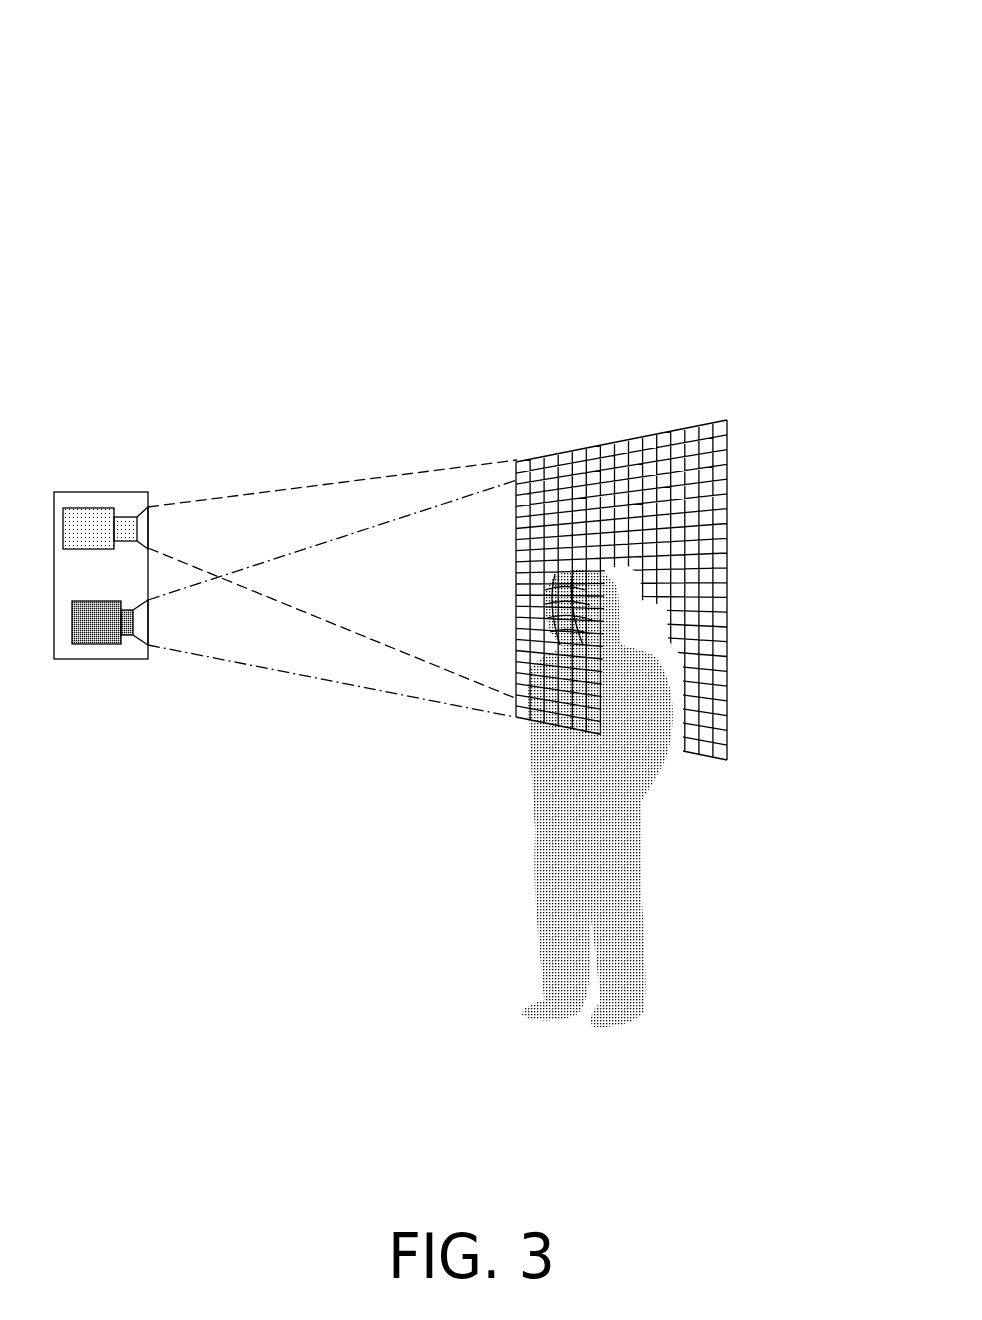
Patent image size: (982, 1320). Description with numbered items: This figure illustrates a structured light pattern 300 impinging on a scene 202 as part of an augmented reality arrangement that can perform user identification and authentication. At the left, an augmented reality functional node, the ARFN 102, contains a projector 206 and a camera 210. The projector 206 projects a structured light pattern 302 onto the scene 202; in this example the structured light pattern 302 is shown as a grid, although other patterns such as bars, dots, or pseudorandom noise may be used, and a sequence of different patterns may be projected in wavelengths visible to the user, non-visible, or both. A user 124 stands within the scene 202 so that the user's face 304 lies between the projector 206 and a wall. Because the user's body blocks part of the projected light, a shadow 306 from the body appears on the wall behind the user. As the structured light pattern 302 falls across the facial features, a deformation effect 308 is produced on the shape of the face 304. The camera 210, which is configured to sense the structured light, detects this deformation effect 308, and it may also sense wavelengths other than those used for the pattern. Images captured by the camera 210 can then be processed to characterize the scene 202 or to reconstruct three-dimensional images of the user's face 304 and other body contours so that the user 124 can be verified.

The structured light pattern 300 is at (770, 36).
The ARFN 102 is at (75, 660).
The projector 206 is at (90, 527).
The camera 210 is at (108, 643).
The scene 202 is at (503, 678).
The structured light pattern 302 is at (519, 479).
The face 304 is at (576, 566).
The shadow 306 is at (628, 585).
The deformation effect 308 is at (434, 702).
The user 124 is at (656, 767).